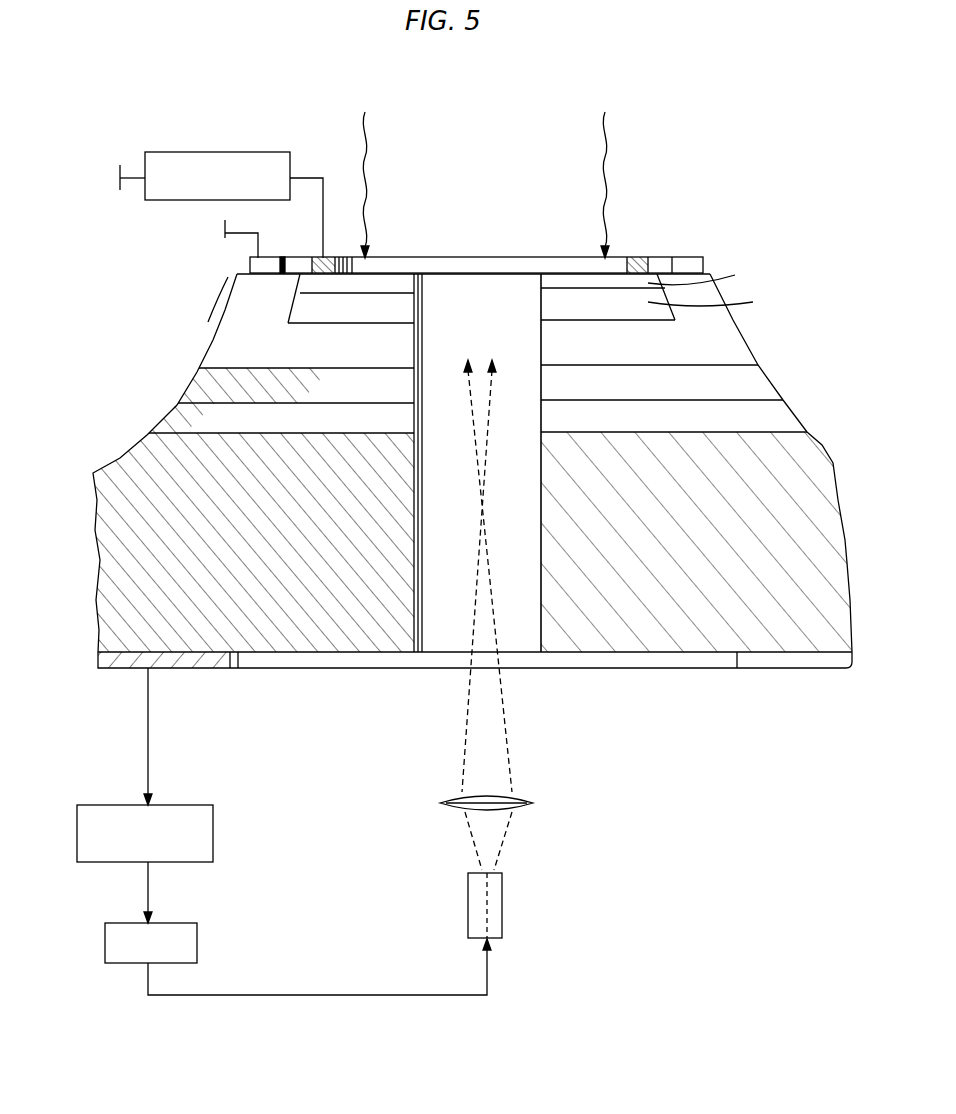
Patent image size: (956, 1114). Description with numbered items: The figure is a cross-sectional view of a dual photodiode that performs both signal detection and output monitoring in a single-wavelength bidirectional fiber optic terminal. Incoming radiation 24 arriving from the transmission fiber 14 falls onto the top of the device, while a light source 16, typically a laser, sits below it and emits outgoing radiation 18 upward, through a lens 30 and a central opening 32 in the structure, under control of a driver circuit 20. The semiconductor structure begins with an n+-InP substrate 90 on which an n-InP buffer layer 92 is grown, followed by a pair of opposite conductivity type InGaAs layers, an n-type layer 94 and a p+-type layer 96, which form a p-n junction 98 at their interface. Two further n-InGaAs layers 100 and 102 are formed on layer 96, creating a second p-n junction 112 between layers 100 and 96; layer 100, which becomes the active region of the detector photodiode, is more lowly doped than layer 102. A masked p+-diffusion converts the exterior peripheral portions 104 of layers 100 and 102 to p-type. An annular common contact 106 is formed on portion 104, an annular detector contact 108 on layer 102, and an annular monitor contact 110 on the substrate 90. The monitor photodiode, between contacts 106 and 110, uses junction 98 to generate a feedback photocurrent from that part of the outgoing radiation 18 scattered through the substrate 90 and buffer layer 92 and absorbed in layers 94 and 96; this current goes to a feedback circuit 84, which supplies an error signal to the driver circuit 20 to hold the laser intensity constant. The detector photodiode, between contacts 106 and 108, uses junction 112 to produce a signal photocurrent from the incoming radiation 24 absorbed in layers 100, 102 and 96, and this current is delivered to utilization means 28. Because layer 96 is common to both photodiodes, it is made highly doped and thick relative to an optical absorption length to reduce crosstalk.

The transmission fiber 14 is at (480, 80).
The light source 16 is at (502, 906).
The outgoing radiation 18 is at (503, 746).
The driver circuit 20 is at (138, 928).
The incoming radiation 24 is at (371, 182).
The utilization means 28 is at (248, 152).
The lens 30 is at (522, 800).
The aperture well 32 is at (515, 627).
The feedback circuit 84 is at (128, 808).
The n+-InP substrate 90 is at (800, 458).
The n-InP buffer layer 92 is at (760, 412).
The n-type InGaAs layer 94 is at (742, 383).
The p+-InGaAs layer 96 is at (718, 336).
The p-n junction 98 is at (725, 359).
The n-InGaAs layer 100 is at (553, 305).
The n-InGaAs layer 102 is at (550, 281).
The exterior peripheral portions 104 is at (213, 294).
The annular common contact 106 is at (700, 257).
The annular detector contact 108 is at (637, 257).
The annular monitor contact 110 is at (790, 668).
The second p-n junction 112 is at (562, 322).